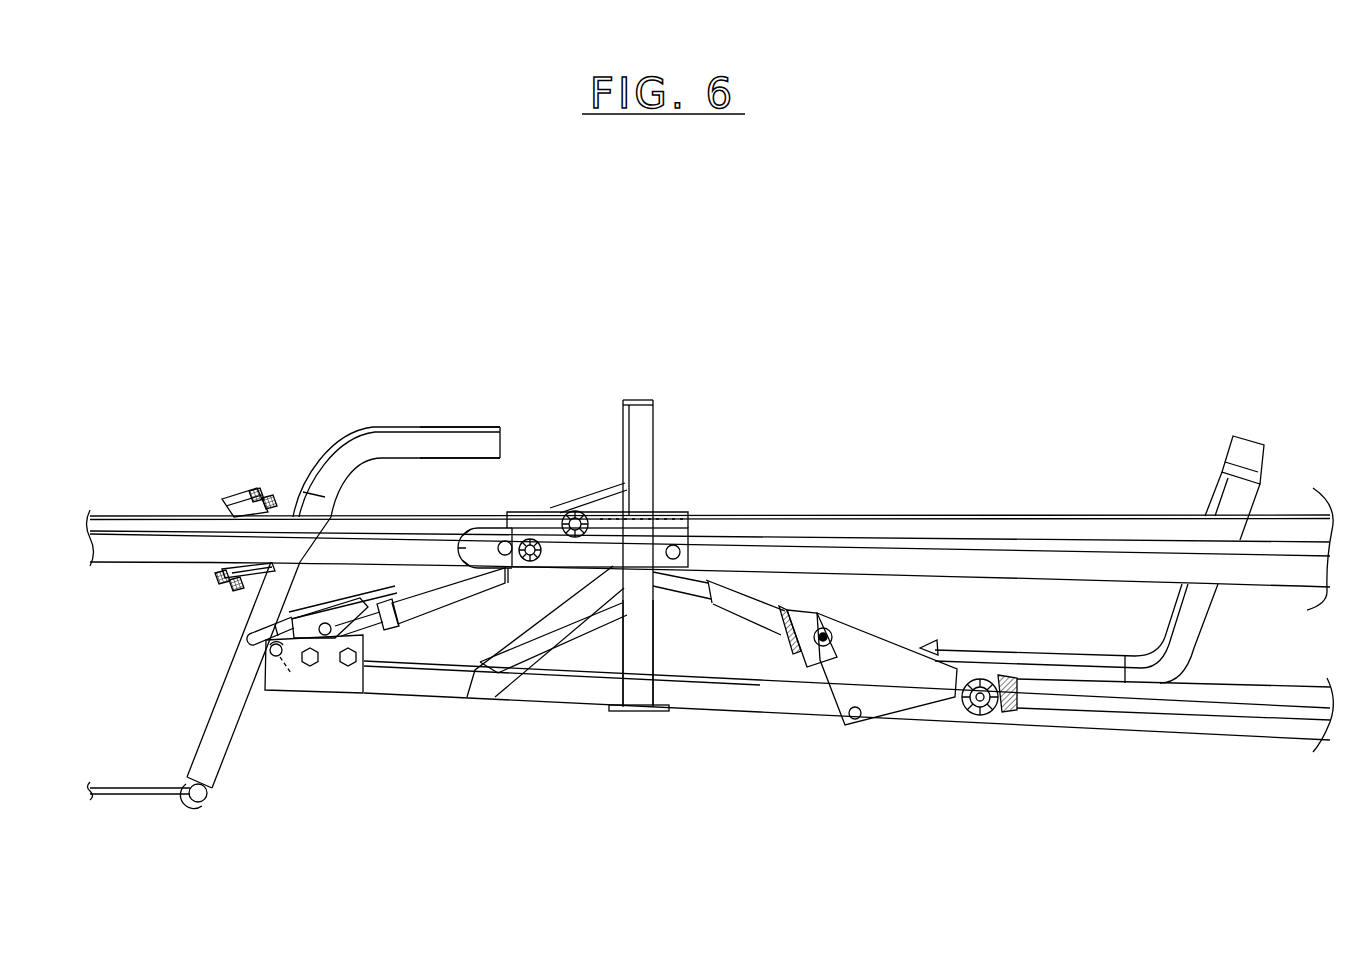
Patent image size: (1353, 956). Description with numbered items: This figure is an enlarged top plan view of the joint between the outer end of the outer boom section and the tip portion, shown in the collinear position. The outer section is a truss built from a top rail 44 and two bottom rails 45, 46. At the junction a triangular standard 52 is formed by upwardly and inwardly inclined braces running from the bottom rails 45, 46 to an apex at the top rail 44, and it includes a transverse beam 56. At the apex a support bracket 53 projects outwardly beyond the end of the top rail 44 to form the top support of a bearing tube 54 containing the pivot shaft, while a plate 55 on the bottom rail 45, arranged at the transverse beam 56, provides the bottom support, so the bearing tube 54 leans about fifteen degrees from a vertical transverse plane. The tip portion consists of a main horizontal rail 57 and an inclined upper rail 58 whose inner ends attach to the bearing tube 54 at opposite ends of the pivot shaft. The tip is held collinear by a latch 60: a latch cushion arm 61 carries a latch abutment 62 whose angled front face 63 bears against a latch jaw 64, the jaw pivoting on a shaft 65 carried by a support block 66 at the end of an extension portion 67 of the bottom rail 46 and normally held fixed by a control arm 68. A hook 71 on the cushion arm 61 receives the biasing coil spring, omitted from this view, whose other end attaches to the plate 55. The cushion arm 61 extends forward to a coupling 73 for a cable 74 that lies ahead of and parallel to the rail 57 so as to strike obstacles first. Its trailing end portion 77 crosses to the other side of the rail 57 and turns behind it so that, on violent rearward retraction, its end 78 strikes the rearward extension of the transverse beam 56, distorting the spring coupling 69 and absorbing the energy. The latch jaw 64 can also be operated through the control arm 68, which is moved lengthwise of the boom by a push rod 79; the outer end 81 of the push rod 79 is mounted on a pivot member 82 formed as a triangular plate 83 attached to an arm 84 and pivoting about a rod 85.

The top rail 44 is at (1157, 560).
The bottom rail 45 is at (1058, 520).
The bottom rail 46 is at (747, 707).
The triangular standard 52 is at (647, 687).
The support bracket 53 is at (553, 552).
The bearing tube 54 is at (567, 517).
The plate 55 is at (610, 507).
The transverse beam 56 is at (643, 440).
The main horizontal rail 57 is at (358, 517).
The inclined upper rail 58 is at (410, 540).
The latch 60 is at (283, 713).
The latch cushion arm 61 is at (223, 753).
The latch abutment 62 is at (278, 665).
The angled front face 63 is at (284, 659).
The latch jaw 64 is at (327, 600).
The shaft 65 is at (268, 655).
The support block 66 is at (330, 680).
The extension portion 67 is at (417, 685).
The control arm 68 is at (450, 607).
The spring coupling 69 is at (223, 493).
The hook 71 is at (245, 635).
The coupling 73 is at (207, 805).
The cable 74 is at (128, 793).
The trailing end portion 77 is at (462, 440).
The end 78 is at (505, 438).
The push rod 79 is at (1102, 710).
The outer end 81 is at (982, 712).
The pivot member 82 is at (895, 708).
The triangular plate 83 is at (883, 640).
The arm 84 is at (1087, 660).
The rod 85 is at (855, 728).